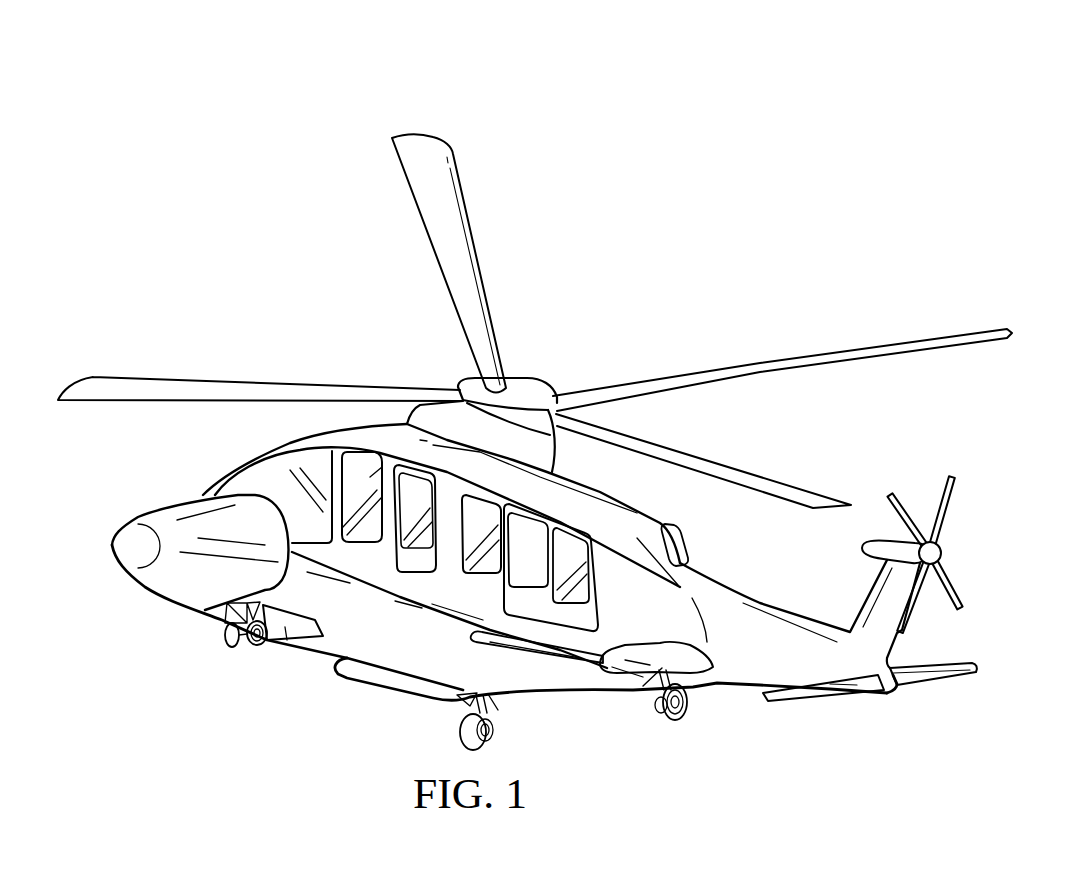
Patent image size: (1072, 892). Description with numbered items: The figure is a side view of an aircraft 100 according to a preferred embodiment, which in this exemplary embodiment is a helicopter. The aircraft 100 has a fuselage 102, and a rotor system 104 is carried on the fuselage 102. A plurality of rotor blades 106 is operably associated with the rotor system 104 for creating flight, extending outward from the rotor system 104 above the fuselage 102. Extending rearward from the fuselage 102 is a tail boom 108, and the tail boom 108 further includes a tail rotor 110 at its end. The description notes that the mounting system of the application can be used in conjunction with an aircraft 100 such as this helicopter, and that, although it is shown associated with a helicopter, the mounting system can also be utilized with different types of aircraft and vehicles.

The aircraft 100 is at (200, 118).
The fuselage 102 is at (332, 643).
The rotor system 104 is at (550, 345).
The rotor blades 106 is at (767, 376).
The tail boom 108 is at (742, 669).
The tail rotor 110 is at (945, 523).